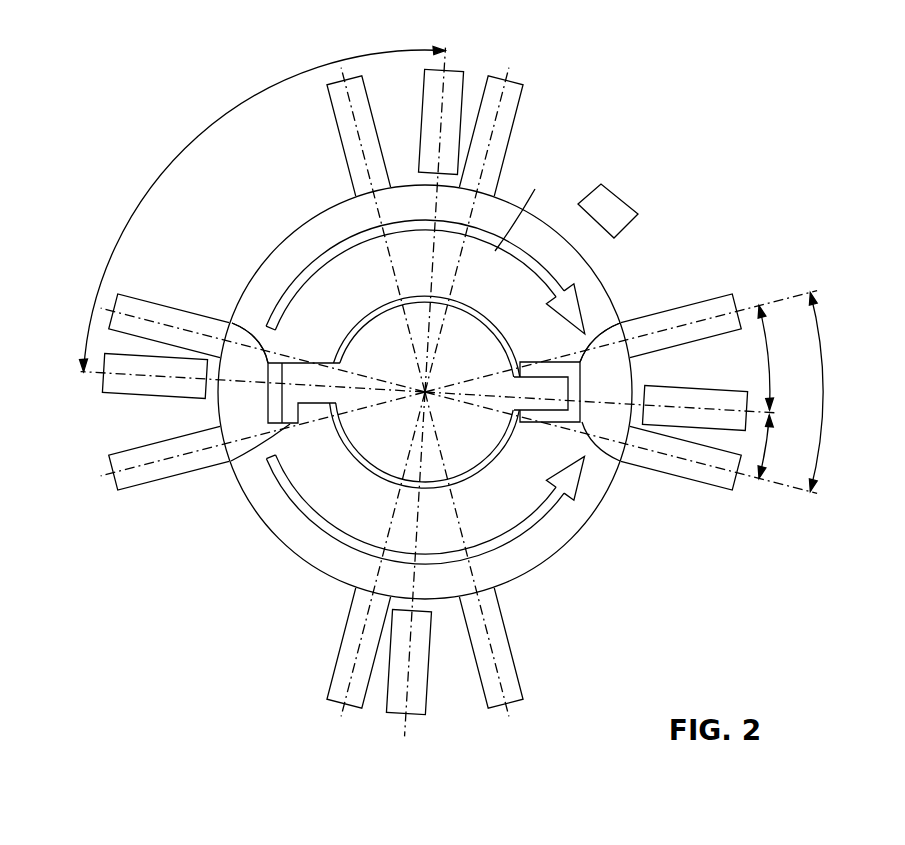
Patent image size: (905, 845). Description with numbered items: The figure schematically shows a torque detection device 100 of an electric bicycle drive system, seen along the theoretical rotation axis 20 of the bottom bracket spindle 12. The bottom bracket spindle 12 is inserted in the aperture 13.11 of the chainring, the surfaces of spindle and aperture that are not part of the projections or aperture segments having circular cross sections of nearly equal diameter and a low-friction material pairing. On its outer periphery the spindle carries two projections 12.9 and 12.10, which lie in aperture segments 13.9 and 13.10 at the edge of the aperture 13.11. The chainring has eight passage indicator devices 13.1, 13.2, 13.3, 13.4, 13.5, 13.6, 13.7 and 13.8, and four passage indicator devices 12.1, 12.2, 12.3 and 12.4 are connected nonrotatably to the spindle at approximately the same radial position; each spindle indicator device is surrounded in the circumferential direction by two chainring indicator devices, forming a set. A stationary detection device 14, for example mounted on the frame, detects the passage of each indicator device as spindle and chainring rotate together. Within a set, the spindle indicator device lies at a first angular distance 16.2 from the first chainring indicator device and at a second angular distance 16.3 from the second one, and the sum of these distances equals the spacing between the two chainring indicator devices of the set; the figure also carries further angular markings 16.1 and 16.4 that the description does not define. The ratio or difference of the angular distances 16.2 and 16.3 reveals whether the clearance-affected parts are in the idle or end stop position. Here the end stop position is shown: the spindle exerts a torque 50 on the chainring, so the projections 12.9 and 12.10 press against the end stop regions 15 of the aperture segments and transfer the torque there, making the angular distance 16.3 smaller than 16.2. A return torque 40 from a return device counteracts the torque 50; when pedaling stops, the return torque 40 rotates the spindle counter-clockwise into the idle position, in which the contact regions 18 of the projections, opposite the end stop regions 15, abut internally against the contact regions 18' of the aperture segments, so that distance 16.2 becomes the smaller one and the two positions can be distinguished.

The torque detection device 100 is at (218, 625).
The bottom bracket spindle 12 is at (383, 300).
The passage indicator device 12.1 is at (398, 706).
The passage indicator device 12.2 is at (705, 403).
The passage indicator device 12.3 is at (452, 95).
The passage indicator device 12.4 is at (118, 388).
The projection 12.9 is at (588, 424).
The projection 12.10 is at (238, 312).
The passage indicator device 13.1 is at (347, 708).
The passage indicator device 13.2 is at (500, 710).
The passage indicator device 13.3 is at (718, 480).
The passage indicator device 13.4 is at (720, 298).
The passage indicator device 13.5 is at (517, 93).
The passage indicator device 13.6 is at (332, 95).
The passage indicator device 13.7 is at (130, 293).
The passage indicator device 13.8 is at (143, 480).
The aperture segment 13.9 is at (636, 306).
The aperture segment 13.10 is at (240, 474).
The aperture 13.11 is at (355, 533).
The detection device 14 is at (618, 195).
The end stop region 15 is at (293, 350).
The angular extent 16.1 is at (826, 430).
The first angular distance 16.2 is at (770, 347).
The second angular distance 16.3 is at (777, 453).
The angular extent 16.4 is at (180, 142).
The contact region 18 is at (370, 357).
The contact region 18' is at (419, 393).
The theoretical rotation axis 20 is at (365, 319).
The return torque 40 is at (500, 247).
The torque 50 is at (506, 540).